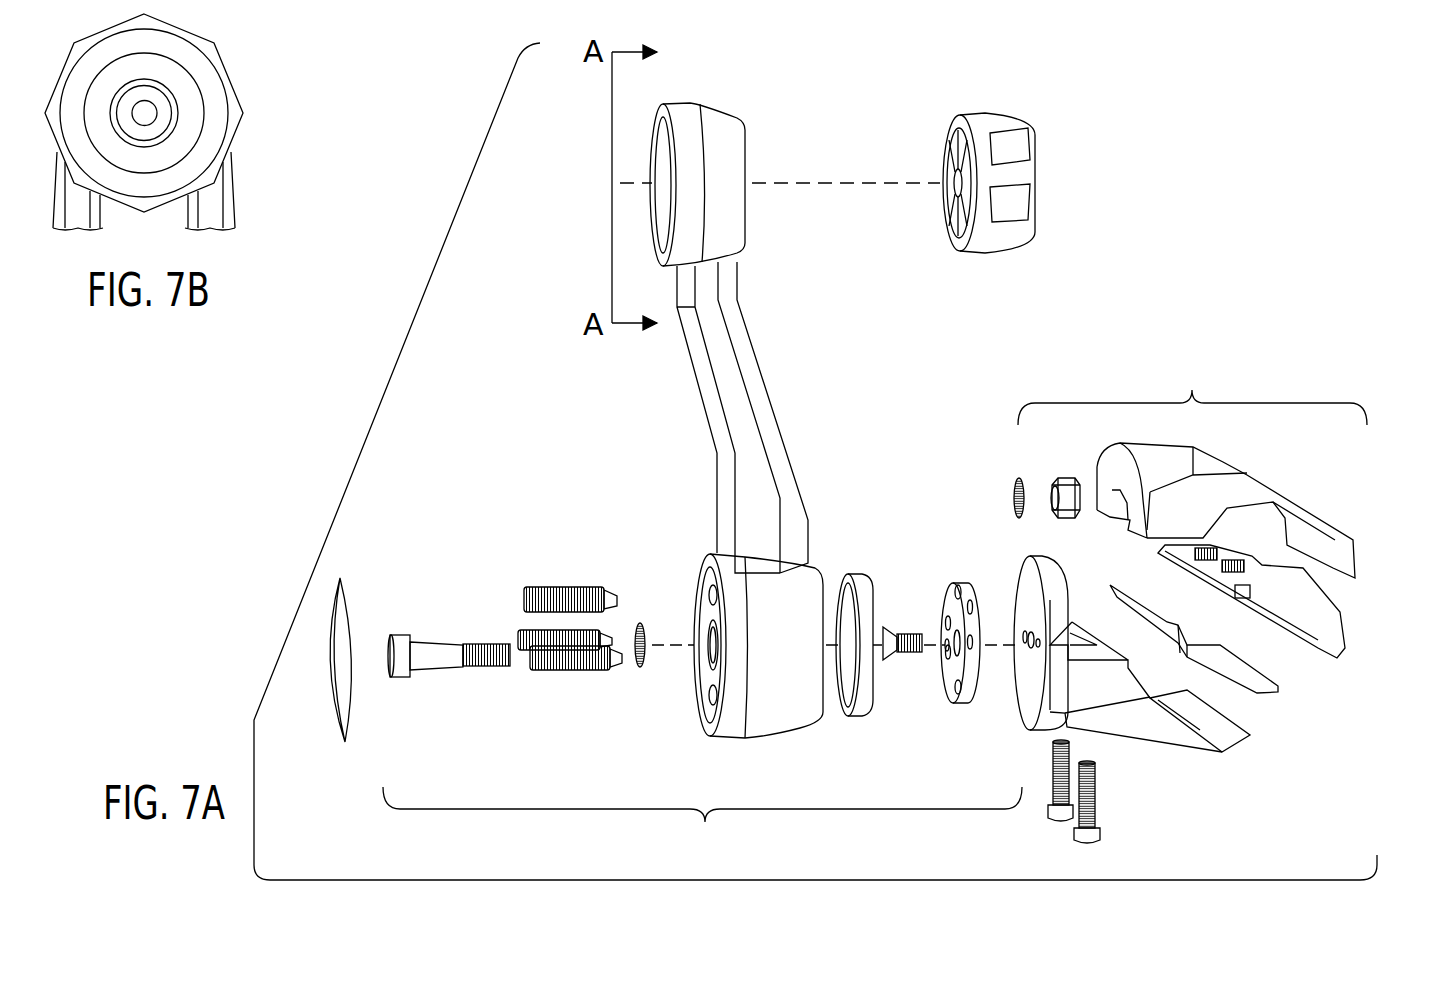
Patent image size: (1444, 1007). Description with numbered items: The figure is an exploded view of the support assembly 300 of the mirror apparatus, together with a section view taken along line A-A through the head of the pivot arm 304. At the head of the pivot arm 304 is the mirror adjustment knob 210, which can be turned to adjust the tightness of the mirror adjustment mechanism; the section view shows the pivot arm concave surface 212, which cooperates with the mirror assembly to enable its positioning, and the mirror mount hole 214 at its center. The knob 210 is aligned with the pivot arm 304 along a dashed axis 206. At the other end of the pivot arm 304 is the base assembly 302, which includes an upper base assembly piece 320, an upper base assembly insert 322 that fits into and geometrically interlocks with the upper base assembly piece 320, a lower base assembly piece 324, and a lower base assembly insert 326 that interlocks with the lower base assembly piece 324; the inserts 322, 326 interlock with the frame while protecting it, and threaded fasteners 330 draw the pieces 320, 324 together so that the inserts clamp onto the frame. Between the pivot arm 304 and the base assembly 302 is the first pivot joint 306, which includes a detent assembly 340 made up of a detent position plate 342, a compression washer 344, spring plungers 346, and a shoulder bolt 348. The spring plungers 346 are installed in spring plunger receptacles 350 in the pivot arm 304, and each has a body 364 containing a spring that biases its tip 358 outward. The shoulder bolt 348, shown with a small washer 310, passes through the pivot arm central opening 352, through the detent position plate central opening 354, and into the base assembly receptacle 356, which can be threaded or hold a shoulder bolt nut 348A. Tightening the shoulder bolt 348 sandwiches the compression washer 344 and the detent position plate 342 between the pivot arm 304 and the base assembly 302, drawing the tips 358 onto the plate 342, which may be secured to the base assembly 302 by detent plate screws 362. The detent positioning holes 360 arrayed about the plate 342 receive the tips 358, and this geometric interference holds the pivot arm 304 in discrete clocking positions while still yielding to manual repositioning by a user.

In FIG. 7B, the pivot arm concave surface 212 is at (155, 132).
In FIG. 7B, the mirror mount hole 214 is at (145, 113).
In FIG. 7A, the support assembly 300 is at (1167, 100).
In FIG. 7A, the axis 206 is at (822, 183).
In FIG. 7A, the mirror adjustment knob 210 is at (1037, 220).
In FIG. 7A, the pivot arm 304 is at (697, 379).
In FIG. 7A, the base assembly 302 is at (1192, 395).
In FIG. 7A, the shoulder bolt nut 348A is at (1063, 478).
In FIG. 7A, the upper base assembly piece 320 is at (1300, 498).
In FIG. 7A, the upper base assembly insert 322 is at (1340, 625).
In FIG. 7A, the lower base assembly insert 326 is at (1278, 690).
In FIG. 7A, the lower base assembly piece 324 is at (1236, 745).
In FIG. 7A, the threaded fasteners 330 is at (1095, 790).
In FIG. 7A, the detent position plate 342 is at (946, 653).
In FIG. 7A, the detent position plate central opening 354 is at (967, 630).
In FIG. 7A, the detent positioning holes 360 is at (947, 613).
In FIG. 7A, the base assembly receptacle 356 is at (1018, 695).
In FIG. 7A, the detent plate screws 362 is at (907, 663).
In FIG. 7A, the compression washer 344 is at (856, 712).
In FIG. 7A, the pivot arm central opening 352 is at (710, 640).
In FIG. 7A, the spring plunger receptacles 350 is at (711, 596).
In FIG. 7A, the washer 310 is at (672, 648).
In FIG. 7A, the body of the spring plunger 364 is at (520, 635).
In FIG. 7A, the spring plungers 346 is at (548, 586).
In FIG. 7A, the tips of the spring plungers 358 is at (614, 640).
In FIG. 7A, the shoulder bolt 348 is at (440, 636).
In FIG. 7A, the first pivot joint 306 is at (702, 828).
In FIG. 7A, the detent assembly 340 is at (705, 822).